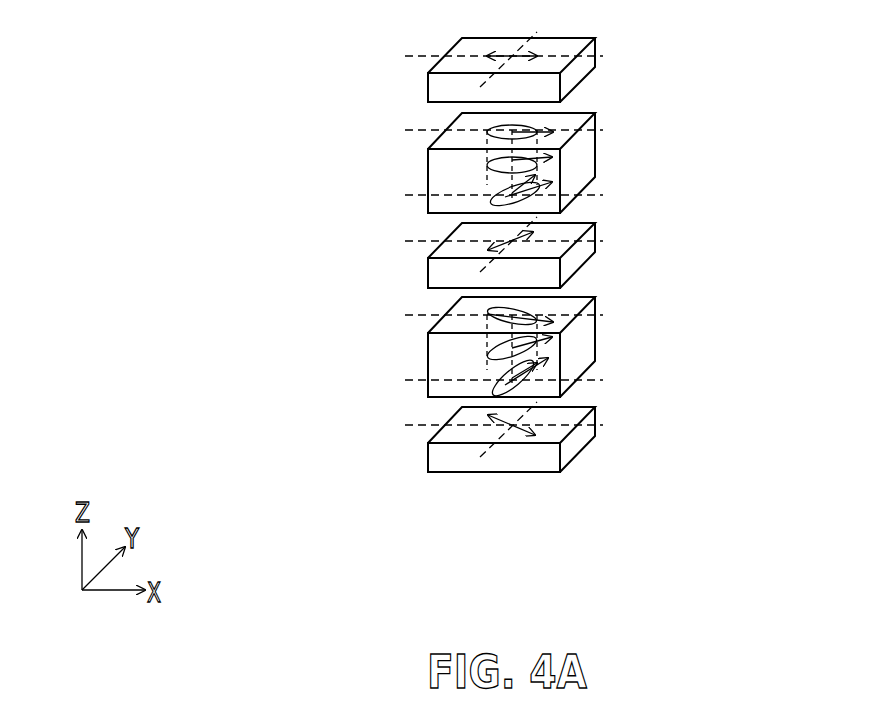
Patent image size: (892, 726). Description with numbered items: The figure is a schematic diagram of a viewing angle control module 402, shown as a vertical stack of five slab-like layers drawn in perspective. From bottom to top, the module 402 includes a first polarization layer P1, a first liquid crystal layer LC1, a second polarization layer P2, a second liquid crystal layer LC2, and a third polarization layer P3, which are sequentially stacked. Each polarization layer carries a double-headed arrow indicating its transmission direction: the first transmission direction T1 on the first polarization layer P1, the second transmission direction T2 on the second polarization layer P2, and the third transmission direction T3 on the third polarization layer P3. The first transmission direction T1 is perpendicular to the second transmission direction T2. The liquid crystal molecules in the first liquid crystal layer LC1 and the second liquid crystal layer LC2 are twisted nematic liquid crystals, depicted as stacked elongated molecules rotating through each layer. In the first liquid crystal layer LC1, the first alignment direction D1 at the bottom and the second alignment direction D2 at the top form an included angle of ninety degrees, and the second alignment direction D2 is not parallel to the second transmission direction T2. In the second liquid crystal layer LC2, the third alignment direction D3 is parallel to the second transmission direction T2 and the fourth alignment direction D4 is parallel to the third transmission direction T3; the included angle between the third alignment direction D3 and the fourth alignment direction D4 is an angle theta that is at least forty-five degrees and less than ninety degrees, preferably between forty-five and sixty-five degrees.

The viewing angle control module 402 is at (573, 334).
The first polarization layer P1 is at (588, 423).
The second polarization layer P2 is at (588, 235).
The third polarization layer P3 is at (588, 62).
The first liquid crystal layer LC1 is at (588, 338).
The second liquid crystal layer LC2 is at (588, 152).
The first transmission direction T1 is at (510, 428).
The second transmission direction T2 is at (503, 242).
The third transmission direction T3 is at (512, 55).
The first alignment direction D1 is at (500, 372).
The second alignment direction D2 is at (500, 304).
The third alignment direction D3 is at (500, 187).
The fourth alignment direction D4 is at (512, 122).